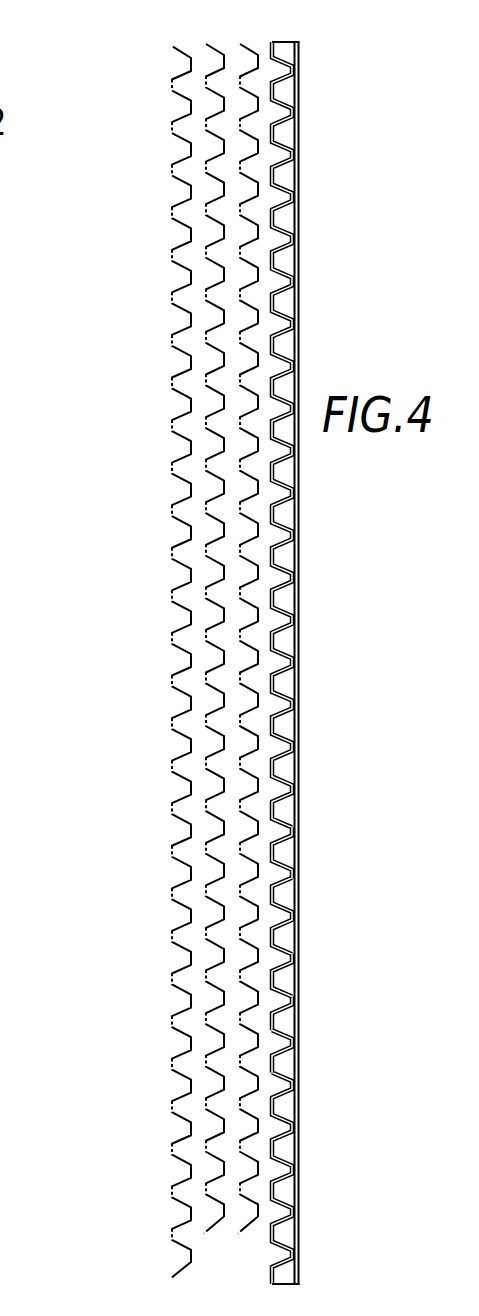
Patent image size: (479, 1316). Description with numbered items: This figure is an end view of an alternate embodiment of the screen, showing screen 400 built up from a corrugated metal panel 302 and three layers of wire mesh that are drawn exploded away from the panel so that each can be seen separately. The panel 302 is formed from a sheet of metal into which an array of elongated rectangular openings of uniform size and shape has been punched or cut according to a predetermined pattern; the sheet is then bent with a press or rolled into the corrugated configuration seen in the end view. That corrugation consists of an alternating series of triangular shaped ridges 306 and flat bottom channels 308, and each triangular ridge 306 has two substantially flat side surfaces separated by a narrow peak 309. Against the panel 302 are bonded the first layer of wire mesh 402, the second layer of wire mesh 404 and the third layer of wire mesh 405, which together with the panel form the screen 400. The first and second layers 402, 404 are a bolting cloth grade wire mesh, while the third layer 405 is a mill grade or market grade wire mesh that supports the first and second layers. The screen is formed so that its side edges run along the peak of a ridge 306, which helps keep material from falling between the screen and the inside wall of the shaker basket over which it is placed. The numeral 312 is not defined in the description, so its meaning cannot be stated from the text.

The screen 400 is at (301, 322).
The panel 302 is at (283, 87).
The edge strip 312 is at (273, 40).
The first layer of wire mesh 402 is at (240, 40).
The second layer of wire mesh 404 is at (205, 40).
The third layer of wire mesh 405 is at (173, 46).
The triangular shaped ridge 306 is at (273, 973).
The flat bottom channel 308 is at (293, 1042).
The narrow peak 309 is at (295, 856).